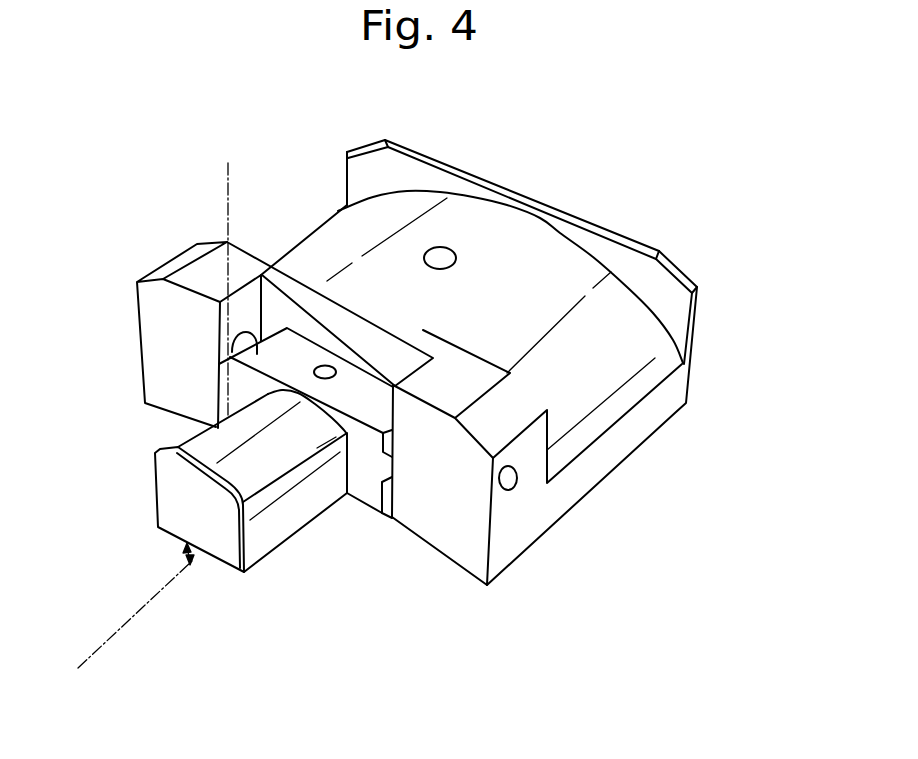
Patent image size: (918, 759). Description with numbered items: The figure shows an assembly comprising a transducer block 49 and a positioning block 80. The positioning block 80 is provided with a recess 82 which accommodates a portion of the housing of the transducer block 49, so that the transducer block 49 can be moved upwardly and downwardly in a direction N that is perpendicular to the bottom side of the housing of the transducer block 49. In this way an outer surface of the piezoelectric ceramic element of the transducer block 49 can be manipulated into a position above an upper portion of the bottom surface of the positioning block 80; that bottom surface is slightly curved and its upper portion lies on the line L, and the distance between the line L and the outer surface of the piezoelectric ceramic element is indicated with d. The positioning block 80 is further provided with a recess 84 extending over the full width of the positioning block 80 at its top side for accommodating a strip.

The positioning block 80 is at (690, 375).
The recess 82 is at (250, 294).
The recess 84 is at (530, 259).
The transducer block 49 is at (297, 517).
The direction N is at (228, 181).
The line L is at (115, 635).
The distance d is at (183, 553).